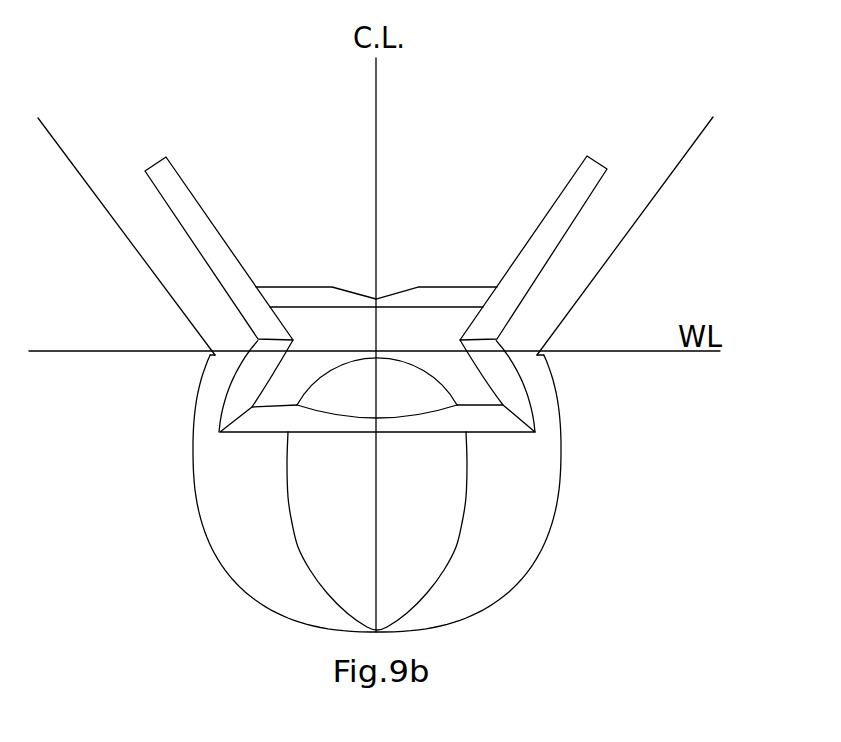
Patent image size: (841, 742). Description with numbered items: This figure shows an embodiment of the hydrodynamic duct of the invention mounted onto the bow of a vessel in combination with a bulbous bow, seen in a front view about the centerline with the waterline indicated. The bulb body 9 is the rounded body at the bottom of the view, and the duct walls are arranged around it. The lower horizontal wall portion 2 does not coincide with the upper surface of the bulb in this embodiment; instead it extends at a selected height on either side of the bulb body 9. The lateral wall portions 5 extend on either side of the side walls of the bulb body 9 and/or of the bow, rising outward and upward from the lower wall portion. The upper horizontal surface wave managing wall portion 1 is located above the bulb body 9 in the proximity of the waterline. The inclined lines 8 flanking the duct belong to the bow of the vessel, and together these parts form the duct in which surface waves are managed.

The upper horizontal surface wave managing wall portion 1 is at (277, 300).
The lower horizontal wall portion 2 is at (250, 423).
The lateral wall portions 5 is at (180, 177).
The guide line 8 is at (638, 222).
The bulb body 9 is at (468, 482).